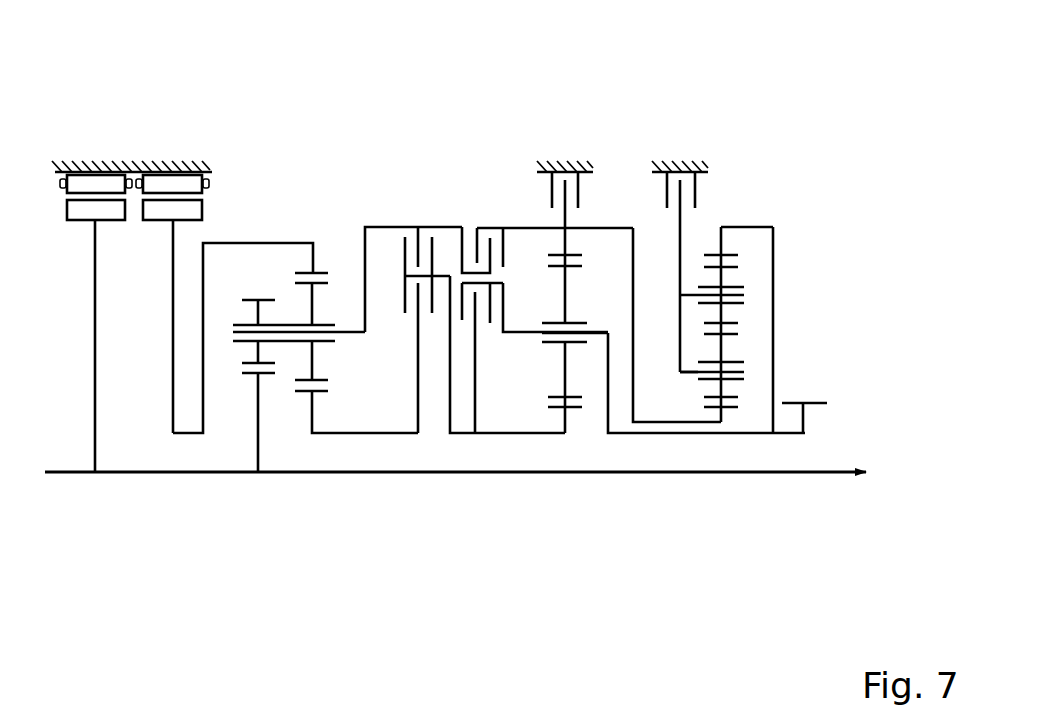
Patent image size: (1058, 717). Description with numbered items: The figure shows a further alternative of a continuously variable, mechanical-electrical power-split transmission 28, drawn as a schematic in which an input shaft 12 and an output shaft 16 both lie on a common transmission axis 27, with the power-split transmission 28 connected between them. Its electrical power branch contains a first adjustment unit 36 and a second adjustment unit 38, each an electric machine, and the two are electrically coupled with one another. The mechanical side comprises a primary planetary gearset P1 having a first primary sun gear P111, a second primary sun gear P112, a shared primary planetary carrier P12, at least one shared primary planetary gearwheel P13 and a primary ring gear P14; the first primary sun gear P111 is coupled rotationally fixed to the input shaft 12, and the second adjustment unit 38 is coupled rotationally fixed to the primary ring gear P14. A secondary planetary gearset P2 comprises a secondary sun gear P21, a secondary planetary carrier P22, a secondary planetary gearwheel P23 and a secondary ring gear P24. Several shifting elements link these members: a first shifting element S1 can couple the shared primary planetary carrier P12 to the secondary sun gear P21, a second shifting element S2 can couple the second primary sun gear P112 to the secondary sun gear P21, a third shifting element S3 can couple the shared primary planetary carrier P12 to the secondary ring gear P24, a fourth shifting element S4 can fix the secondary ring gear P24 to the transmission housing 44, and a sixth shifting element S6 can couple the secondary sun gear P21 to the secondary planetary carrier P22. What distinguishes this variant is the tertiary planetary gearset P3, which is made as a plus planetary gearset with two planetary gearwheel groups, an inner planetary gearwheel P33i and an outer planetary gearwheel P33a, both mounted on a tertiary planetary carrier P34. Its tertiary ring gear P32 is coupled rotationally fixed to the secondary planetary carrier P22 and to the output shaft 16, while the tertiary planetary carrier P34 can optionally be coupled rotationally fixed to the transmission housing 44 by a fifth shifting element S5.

The input shaft 12 is at (454, 569).
The transmission axis 27 is at (72, 475).
The output shaft 16 is at (795, 402).
The power-split transmission 28 is at (795, 125).
The first adjustment unit 36 is at (90, 147).
The second adjustment unit 38 is at (168, 147).
The transmission housing 44 is at (552, 158).
The primary planetary gearset P1 is at (298, 346).
The first primary sun gear P111 is at (258, 436).
The second primary sun gear P112 is at (312, 410).
The shared primary planetary carrier P12 is at (347, 327).
The shared primary planetary gearwheel P13 is at (284, 320).
The primary ring gear P14 is at (230, 243).
The secondary planetary gearset P2 is at (632, 346).
The secondary sun gear P21 is at (565, 422).
The secondary planetary carrier P22 is at (600, 333).
The secondary planetary gearwheel P23 is at (565, 370).
The secondary ring gear P24 is at (565, 218).
The tertiary planetary gearset P3 is at (818, 346).
The tertiary ring gear P32 is at (747, 227).
The outer planetary gearwheel P33a is at (723, 313).
The inner planetary gearwheel P33i is at (723, 348).
The tertiary planetary carrier P34 is at (692, 372).
The first shifting element S1 is at (418, 218).
The second shifting element S2 is at (407, 325).
The third shifting element S3 is at (487, 218).
The fourth shifting element S4 is at (585, 190).
The fifth shifting element S5 is at (700, 188).
The sixth shifting element S6 is at (467, 328).